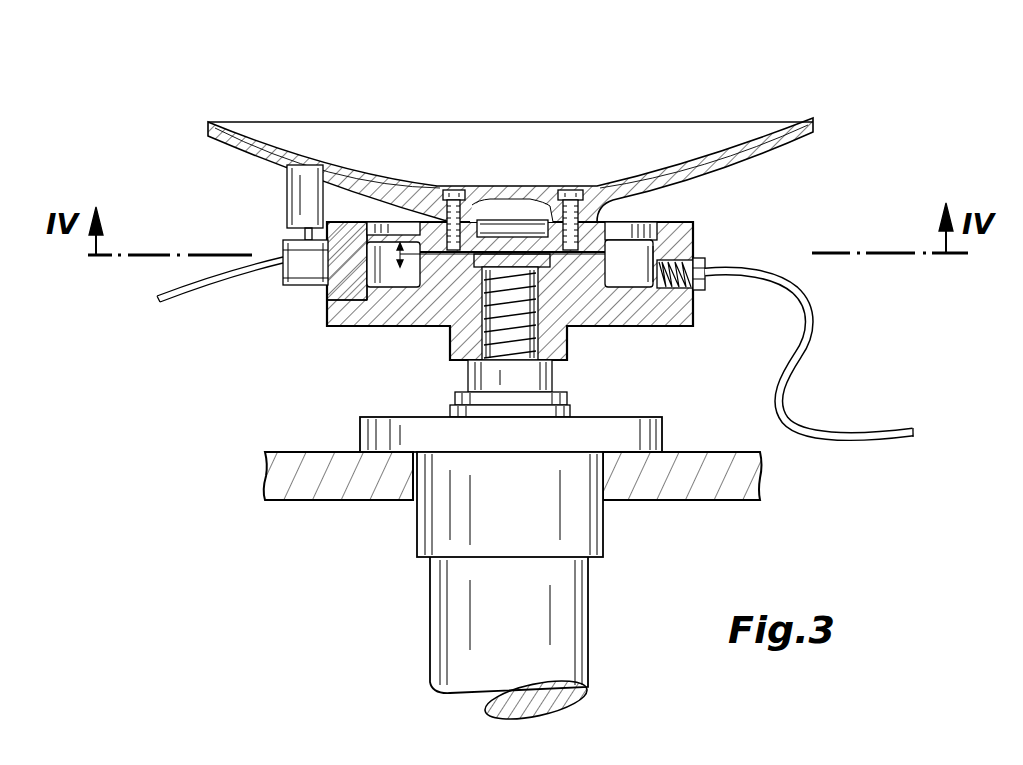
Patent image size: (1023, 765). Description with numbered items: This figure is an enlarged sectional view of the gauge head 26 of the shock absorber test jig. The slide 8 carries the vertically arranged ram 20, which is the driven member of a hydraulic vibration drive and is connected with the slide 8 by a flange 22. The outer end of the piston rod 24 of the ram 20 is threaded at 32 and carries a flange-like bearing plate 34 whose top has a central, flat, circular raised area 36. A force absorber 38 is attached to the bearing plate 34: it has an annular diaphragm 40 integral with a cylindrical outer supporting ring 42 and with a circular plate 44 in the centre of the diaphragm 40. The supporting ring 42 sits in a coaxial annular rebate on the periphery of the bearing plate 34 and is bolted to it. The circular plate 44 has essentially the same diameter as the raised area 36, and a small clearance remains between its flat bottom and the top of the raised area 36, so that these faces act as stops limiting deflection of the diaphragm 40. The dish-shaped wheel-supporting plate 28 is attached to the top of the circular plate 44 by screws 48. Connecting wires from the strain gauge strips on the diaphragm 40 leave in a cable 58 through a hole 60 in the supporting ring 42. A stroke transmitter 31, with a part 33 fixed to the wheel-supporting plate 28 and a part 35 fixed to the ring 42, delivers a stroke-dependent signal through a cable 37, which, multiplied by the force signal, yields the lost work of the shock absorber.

The slide 8 is at (297, 482).
The ram 20 is at (470, 602).
The flange 22 is at (380, 440).
The piston rod 24 is at (497, 380).
The gauge head 26 is at (720, 240).
The dishshaped wheel-engaging plate 28 is at (684, 122).
The stroke transmitter 31 is at (270, 191).
The thread 32 is at (500, 327).
The stroke transmitter part 33 is at (300, 178).
The bearing plate 34 is at (664, 318).
The stroke transmitter part 35 is at (307, 253).
The raised area 36 is at (630, 305).
The cable 37 is at (230, 268).
The force absorber 38 is at (310, 272).
The annular diaphragm 40 is at (638, 233).
The outer supporting ring 42 is at (355, 235).
The circular plate 44 is at (595, 233).
The screws 48 is at (452, 195).
The cable 58 is at (792, 354).
The hole 60 is at (707, 272).